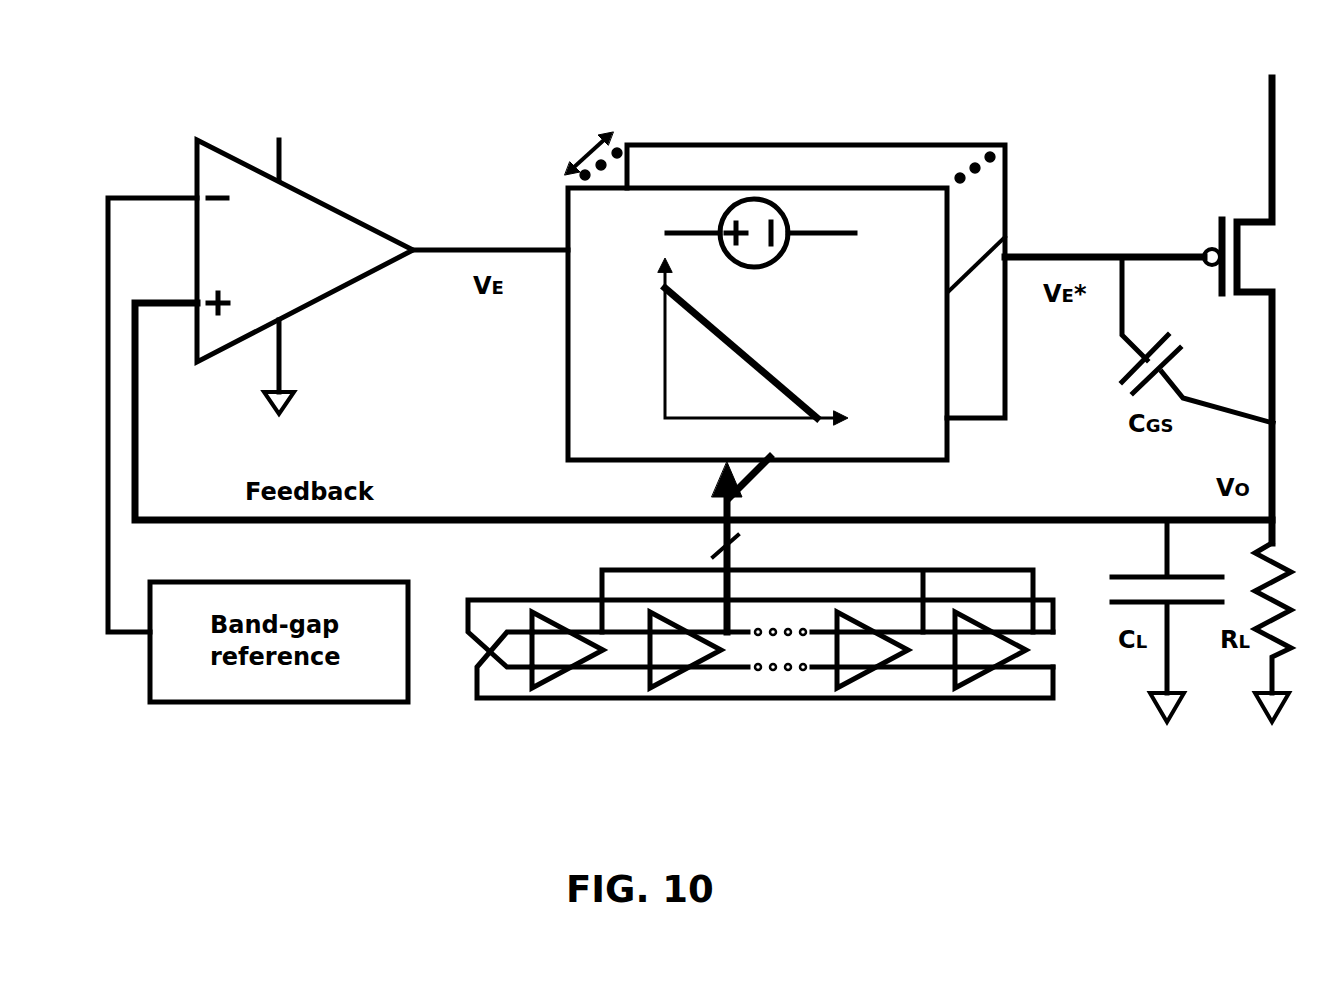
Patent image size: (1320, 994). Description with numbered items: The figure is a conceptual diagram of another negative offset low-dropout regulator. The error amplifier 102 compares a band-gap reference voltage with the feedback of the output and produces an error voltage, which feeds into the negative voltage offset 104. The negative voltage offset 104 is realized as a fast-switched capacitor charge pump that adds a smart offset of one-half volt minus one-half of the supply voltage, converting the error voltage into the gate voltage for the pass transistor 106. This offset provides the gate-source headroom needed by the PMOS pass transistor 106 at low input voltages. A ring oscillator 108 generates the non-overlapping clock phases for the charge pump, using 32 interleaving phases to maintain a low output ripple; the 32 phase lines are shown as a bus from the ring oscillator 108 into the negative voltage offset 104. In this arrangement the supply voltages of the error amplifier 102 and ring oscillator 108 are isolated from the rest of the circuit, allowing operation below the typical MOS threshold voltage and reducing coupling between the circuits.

The error amplifier 102 is at (217, 148).
The negative voltage offset 104 is at (568, 332).
The pass transistor 106 is at (1220, 220).
The ring oscillator 108 is at (473, 697).
The interleaving phases 32 is at (652, 376).